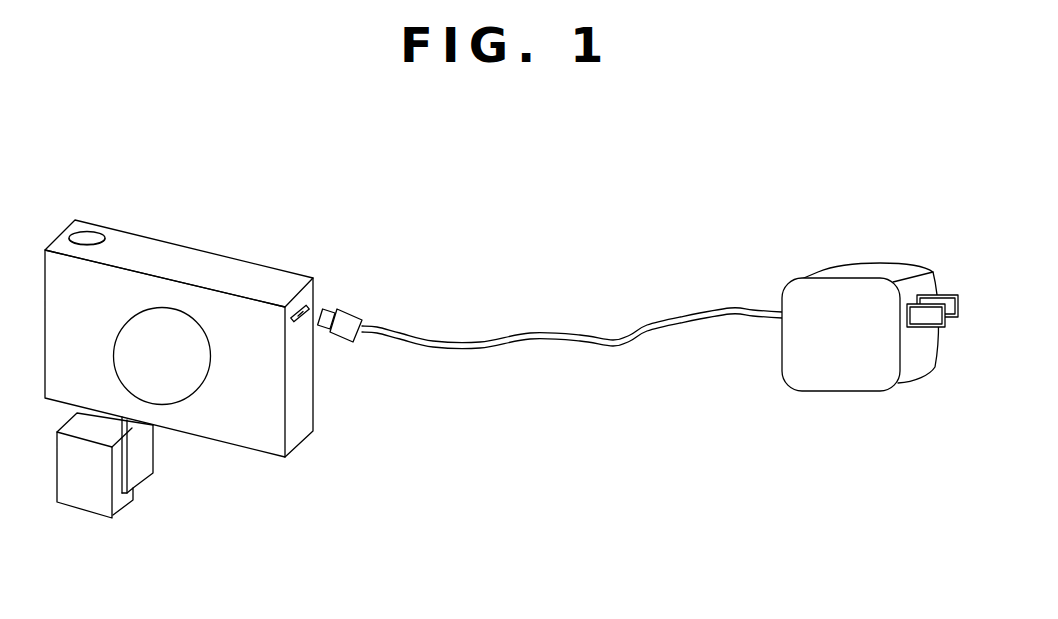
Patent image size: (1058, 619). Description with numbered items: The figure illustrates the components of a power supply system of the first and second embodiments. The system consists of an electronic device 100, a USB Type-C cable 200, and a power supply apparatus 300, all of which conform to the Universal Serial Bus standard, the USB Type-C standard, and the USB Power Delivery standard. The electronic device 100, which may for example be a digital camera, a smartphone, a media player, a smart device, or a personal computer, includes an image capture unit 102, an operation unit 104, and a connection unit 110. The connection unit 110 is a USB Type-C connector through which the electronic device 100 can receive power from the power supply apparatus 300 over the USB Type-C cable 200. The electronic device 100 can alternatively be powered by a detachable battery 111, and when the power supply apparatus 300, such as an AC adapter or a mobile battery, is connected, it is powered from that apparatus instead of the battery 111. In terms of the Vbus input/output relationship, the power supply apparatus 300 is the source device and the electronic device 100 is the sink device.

The electronic device 100 is at (208, 249).
The image capture unit 102 is at (200, 388).
The operation unit 104 is at (90, 231).
The connection unit 110 is at (314, 310).
The battery 111 is at (83, 512).
The USB Type-C cable 200 is at (417, 334).
The power supply apparatus 300 is at (868, 263).